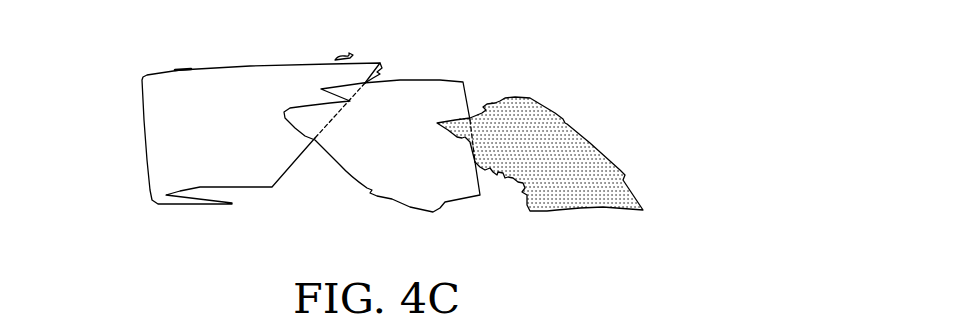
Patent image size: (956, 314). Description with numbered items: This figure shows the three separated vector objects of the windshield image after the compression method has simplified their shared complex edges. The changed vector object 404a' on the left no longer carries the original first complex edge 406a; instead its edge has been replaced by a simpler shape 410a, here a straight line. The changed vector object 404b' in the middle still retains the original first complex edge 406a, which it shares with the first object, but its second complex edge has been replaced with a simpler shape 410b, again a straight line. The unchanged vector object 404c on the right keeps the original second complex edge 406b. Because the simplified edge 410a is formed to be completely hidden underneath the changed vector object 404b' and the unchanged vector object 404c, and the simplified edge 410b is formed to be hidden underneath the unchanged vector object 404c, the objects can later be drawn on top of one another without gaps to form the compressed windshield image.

The changed vector object 404a' is at (232, 120).
The changed vector object 404b' is at (388, 124).
The unchanged vector object 404c is at (601, 151).
The simpler shape 410a is at (287, 170).
The first complex edge 406a is at (357, 178).
The simpler shape 410b is at (480, 195).
The second complex edge 406b is at (518, 195).